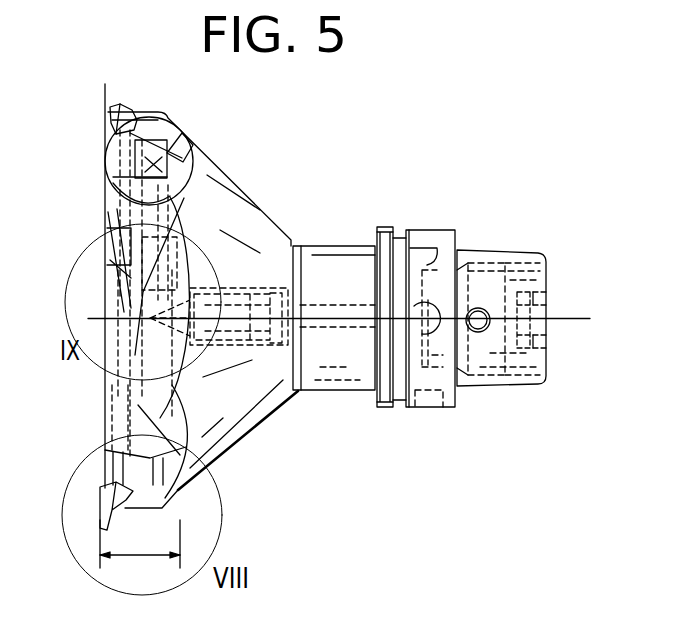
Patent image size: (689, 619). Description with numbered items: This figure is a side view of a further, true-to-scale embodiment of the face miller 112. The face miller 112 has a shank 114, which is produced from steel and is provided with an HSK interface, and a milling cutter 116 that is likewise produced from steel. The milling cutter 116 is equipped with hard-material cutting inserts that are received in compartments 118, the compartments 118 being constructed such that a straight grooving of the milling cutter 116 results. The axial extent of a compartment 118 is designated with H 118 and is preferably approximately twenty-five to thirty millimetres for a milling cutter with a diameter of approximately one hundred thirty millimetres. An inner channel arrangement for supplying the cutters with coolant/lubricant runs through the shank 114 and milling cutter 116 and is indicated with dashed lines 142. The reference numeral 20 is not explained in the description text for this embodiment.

The face miller 112 is at (227, 149).
The shank 114 is at (338, 262).
The milling cutter 116 is at (232, 403).
The dashed lines 142 is at (335, 327).
The tool holder 20 is at (431, 417).
The compartment 118 is at (140, 556).